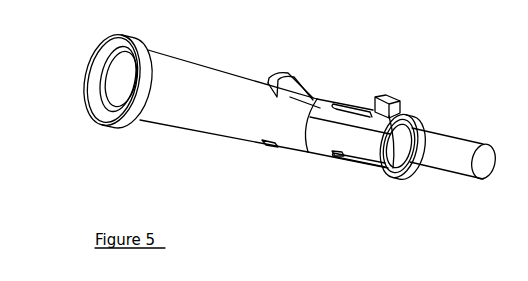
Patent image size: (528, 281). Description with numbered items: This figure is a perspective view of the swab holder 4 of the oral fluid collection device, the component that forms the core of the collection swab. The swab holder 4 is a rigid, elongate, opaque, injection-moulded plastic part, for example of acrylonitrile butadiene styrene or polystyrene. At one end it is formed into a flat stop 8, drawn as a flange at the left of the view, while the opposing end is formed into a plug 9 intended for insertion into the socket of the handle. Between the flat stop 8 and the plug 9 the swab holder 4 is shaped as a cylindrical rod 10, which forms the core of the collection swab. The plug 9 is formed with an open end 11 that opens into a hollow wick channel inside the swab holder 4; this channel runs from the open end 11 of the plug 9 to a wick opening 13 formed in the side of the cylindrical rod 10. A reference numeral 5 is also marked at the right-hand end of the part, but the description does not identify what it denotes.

The swab holder 4 is at (236, 47).
The plunger rod 5 is at (455, 150).
The flat stop 8 is at (91, 76).
The plug 9 is at (365, 152).
The cylindrical rod 10 is at (160, 110).
The open end 11 is at (422, 160).
The wick opening 13 is at (295, 98).